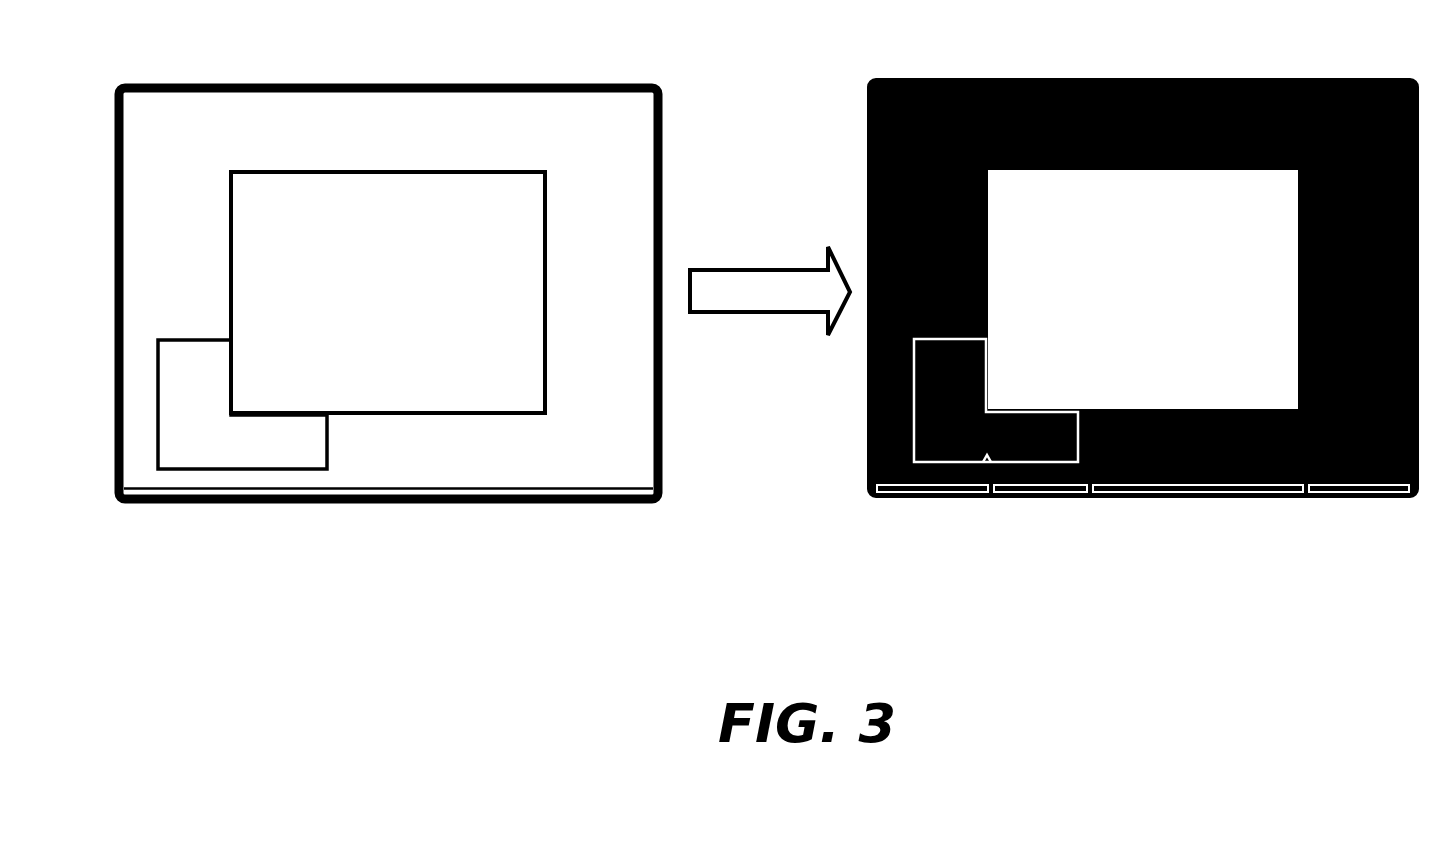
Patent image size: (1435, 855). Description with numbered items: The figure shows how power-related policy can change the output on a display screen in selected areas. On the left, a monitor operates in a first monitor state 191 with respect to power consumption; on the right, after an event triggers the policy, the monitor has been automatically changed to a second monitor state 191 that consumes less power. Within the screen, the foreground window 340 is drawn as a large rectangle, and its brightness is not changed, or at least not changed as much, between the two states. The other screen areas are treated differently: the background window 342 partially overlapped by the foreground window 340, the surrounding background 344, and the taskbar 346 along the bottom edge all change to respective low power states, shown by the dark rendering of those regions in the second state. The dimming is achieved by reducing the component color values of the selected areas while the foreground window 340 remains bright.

The monitor state 191 is at (660, 516).
The foreground window 340 is at (408, 197).
The background window 342 is at (233, 456).
The background 344 is at (547, 467).
The taskbar 346 is at (320, 493).